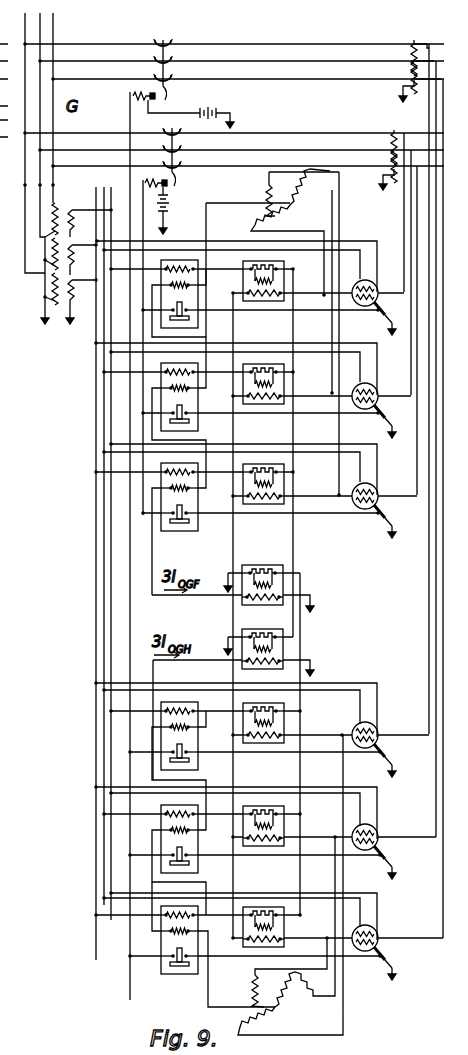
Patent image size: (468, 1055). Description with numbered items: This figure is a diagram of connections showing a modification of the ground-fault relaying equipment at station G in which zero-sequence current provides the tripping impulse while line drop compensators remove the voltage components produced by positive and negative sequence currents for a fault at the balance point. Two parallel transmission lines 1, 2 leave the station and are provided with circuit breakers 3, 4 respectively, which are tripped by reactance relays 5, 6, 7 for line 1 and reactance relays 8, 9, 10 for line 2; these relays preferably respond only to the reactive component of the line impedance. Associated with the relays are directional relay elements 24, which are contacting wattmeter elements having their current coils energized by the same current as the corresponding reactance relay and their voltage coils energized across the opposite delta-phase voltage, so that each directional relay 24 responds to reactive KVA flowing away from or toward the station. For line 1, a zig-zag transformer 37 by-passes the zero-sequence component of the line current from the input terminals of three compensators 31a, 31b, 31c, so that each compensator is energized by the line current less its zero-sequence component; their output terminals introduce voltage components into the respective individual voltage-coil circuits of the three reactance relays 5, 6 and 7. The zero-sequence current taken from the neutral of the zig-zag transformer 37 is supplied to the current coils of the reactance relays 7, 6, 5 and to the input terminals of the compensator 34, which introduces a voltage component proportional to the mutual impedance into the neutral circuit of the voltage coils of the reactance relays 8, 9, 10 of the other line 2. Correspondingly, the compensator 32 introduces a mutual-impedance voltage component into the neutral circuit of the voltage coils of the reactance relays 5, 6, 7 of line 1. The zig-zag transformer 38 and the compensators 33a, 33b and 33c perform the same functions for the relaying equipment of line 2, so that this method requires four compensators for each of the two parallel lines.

The line 1 is at (307, 166).
The line 2 is at (311, 46).
The circuit breaker 3 is at (180, 170).
The circuit breaker 4 is at (170, 86).
The reactance relay 5 is at (198, 502).
The reactance relay 6 is at (198, 402).
The reactance relay 7 is at (198, 299).
The reactance relay 8 is at (161, 972).
The reactance relay 9 is at (161, 868).
The reactance relay 10 is at (161, 766).
The directional relay element 24 is at (388, 925).
The compensator 31a is at (284, 470).
The compensator 31b is at (284, 370).
The compensator 31c is at (284, 267).
The compensator 32 is at (246, 628).
The compensator 33a is at (284, 925).
The compensator 33b is at (284, 812).
The compensator 33c is at (284, 709).
The compensator 34 is at (265, 564).
The zig-zag transformer 37 is at (322, 225).
The zig-zag transformer 38 is at (317, 1038).